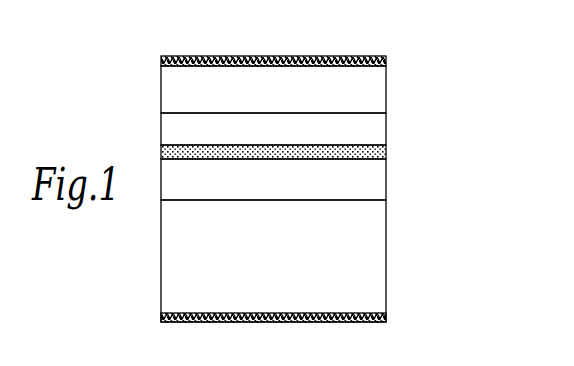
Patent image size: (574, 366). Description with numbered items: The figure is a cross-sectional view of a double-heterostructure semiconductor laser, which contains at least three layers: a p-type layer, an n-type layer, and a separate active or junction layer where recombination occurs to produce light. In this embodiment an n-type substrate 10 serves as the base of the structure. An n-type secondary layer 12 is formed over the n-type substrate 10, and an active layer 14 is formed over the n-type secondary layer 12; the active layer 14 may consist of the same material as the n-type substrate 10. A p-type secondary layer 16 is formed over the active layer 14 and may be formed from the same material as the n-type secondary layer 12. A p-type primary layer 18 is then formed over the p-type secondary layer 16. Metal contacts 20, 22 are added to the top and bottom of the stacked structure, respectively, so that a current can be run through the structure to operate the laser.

The n-type substrate 10 is at (386, 237).
The n-type secondary layer 12 is at (386, 183).
The active layer 14 is at (386, 155).
The p-type secondary layer 16 is at (386, 132).
The p-type primary layer 18 is at (386, 95).
The metal contact 20 is at (386, 63).
The metal contact 22 is at (386, 317).